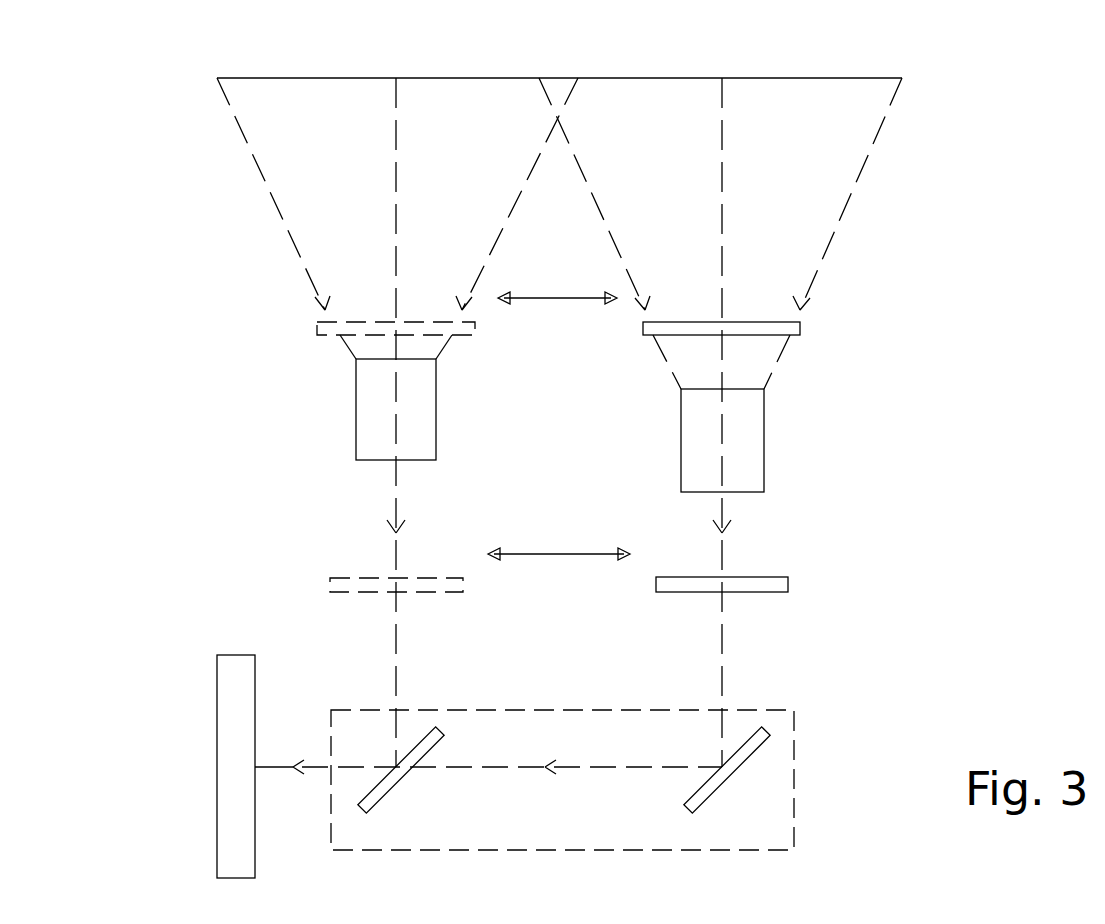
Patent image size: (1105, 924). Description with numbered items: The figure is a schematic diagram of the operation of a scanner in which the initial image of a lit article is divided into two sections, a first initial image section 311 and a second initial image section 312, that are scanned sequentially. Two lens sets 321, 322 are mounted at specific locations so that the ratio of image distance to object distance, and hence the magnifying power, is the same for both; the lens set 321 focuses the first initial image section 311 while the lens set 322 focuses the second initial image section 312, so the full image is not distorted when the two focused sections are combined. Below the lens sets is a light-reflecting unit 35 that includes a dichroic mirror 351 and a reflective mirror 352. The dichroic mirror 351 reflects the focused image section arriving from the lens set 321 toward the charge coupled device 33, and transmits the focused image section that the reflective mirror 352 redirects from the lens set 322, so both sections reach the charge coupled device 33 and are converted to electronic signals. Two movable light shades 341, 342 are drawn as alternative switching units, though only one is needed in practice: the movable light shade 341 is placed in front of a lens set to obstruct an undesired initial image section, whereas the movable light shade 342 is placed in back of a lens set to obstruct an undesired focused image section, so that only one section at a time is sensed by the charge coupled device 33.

The first initial image section 311 is at (265, 78).
The second initial image section 312 is at (852, 78).
The lens set 321 is at (375, 403).
The lens set 322 is at (742, 432).
The movable light shade 341 is at (800, 324).
The movable light shade 342 is at (757, 587).
The charge coupled device 33 is at (228, 740).
The light-reflecting unit 35 is at (572, 805).
The dichroic mirror 351 is at (367, 807).
The reflective mirror 352 is at (700, 807).